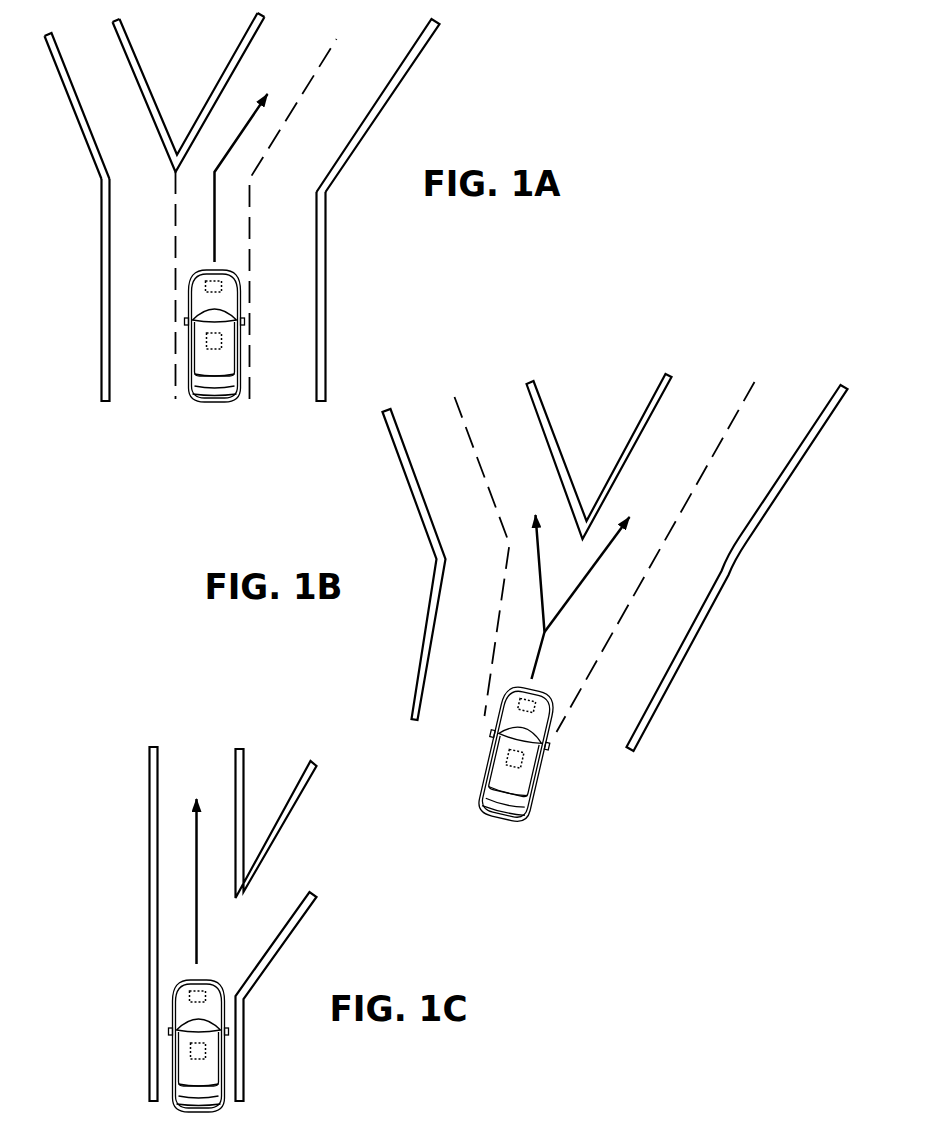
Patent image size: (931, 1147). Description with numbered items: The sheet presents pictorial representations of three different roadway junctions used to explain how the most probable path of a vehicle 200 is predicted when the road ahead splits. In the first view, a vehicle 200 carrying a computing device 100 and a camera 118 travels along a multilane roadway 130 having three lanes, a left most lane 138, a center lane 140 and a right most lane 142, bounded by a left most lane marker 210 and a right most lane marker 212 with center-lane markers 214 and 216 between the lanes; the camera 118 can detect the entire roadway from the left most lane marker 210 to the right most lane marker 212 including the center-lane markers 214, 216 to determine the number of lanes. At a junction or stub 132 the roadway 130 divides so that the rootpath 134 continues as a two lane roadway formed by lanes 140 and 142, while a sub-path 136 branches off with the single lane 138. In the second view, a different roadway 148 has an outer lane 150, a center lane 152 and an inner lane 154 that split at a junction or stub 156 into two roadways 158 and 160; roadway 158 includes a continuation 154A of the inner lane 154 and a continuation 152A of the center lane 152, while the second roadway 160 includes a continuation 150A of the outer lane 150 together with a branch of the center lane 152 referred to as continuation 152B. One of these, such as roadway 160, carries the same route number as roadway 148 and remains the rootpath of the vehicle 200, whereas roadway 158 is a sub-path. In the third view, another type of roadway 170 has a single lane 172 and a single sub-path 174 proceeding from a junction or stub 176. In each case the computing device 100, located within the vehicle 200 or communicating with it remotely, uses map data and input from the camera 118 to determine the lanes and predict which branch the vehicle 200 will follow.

In FIG. 1A, the computing device 100 is at (222, 343).
In FIG. 1B, the computing device 100 is at (525, 762).
In FIG. 1C, the computing device 100 is at (206, 1047).
In FIG. 1A, the camera 118 is at (203, 288).
In FIG. 1B, the camera 118 is at (518, 705).
In FIG. 1C, the camera 118 is at (188, 1000).
In FIG. 1A, the vehicle 200 is at (230, 278).
In FIG. 1B, the vehicle 200 is at (503, 815).
In FIG. 1C, the vehicle 200 is at (216, 983).
In FIG. 1A, the roadway 130 is at (98, 338).
In FIG. 1A, the junction or stub 132 is at (176, 173).
In FIG. 1A, the rootpath 134 is at (434, 30).
In FIG. 1A, the sub-path 136 is at (66, 88).
In FIG. 1A, the lane 138 is at (148, 388).
In FIG. 1A, the lane 140 is at (216, 415).
In FIG. 1A, the lane 142 is at (272, 398).
In FIG. 1A, the left most lane marker 210 is at (102, 290).
In FIG. 1A, the right most lane marker 212 is at (326, 290).
In FIG. 1A, the center-lane marker 214 is at (177, 238).
In FIG. 1A, the center-lane marker 216 is at (250, 218).
In FIG. 1B, the roadway 148 is at (723, 598).
In FIG. 1B, the outer lane 150 is at (453, 713).
In FIG. 1B, the continuation of the outer lane 150A is at (438, 488).
In FIG. 1B, the center lane 152 is at (556, 682).
In FIG. 1B, the continuation of the center lane 152A is at (670, 440).
In FIG. 1B, the continuation of the center lane 152B is at (536, 457).
In FIG. 1B, the inner lane 154 is at (637, 678).
In FIG. 1B, the continuation of the inner lane 154A is at (778, 423).
In FIG. 1B, the junction or stub 156 is at (587, 540).
In FIG. 1B, the roadway 158 is at (775, 503).
In FIG. 1B, the roadway 160 is at (549, 412).
In FIG. 1C, the roadway 170 is at (146, 832).
In FIG. 1C, the lane 172 is at (170, 892).
In FIG. 1C, the sub-path 174 is at (282, 908).
In FIG. 1C, the junction or stub 176 is at (237, 898).